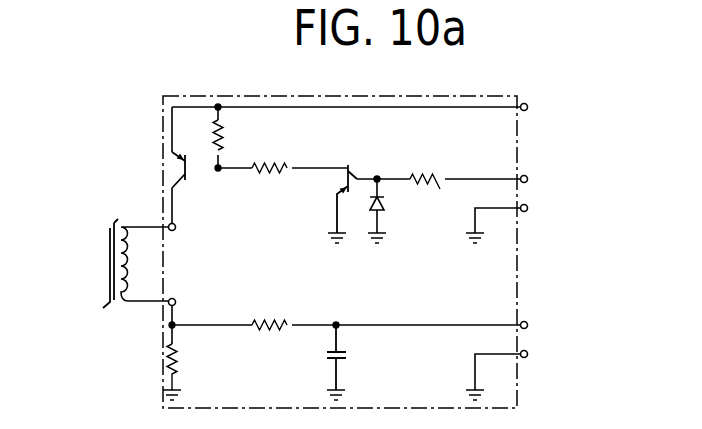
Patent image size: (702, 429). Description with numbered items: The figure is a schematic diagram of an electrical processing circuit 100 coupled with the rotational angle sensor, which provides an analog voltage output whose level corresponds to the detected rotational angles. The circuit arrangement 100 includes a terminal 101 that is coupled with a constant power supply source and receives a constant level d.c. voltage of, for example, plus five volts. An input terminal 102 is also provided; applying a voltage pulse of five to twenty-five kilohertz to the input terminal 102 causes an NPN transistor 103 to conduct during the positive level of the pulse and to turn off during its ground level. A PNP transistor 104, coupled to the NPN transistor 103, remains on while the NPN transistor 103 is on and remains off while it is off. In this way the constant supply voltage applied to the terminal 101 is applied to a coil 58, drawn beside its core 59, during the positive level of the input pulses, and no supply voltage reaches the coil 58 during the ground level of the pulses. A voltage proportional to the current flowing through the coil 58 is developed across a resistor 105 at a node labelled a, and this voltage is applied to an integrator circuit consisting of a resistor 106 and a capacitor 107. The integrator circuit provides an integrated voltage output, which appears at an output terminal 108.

The electrical processing circuit 100 is at (181, 96).
The terminal 101 is at (528, 103).
The input terminal 102 is at (528, 177).
The NPN transistor 103 is at (352, 165).
The PNP transistor 104 is at (196, 177).
The resistor 105 is at (176, 358).
The resistor 106 is at (266, 321).
The capacitor 107 is at (348, 355).
The output terminal 108 is at (528, 322).
The coil 58 is at (118, 228).
The magnetic core 59 is at (107, 238).
The node a is at (176, 320).